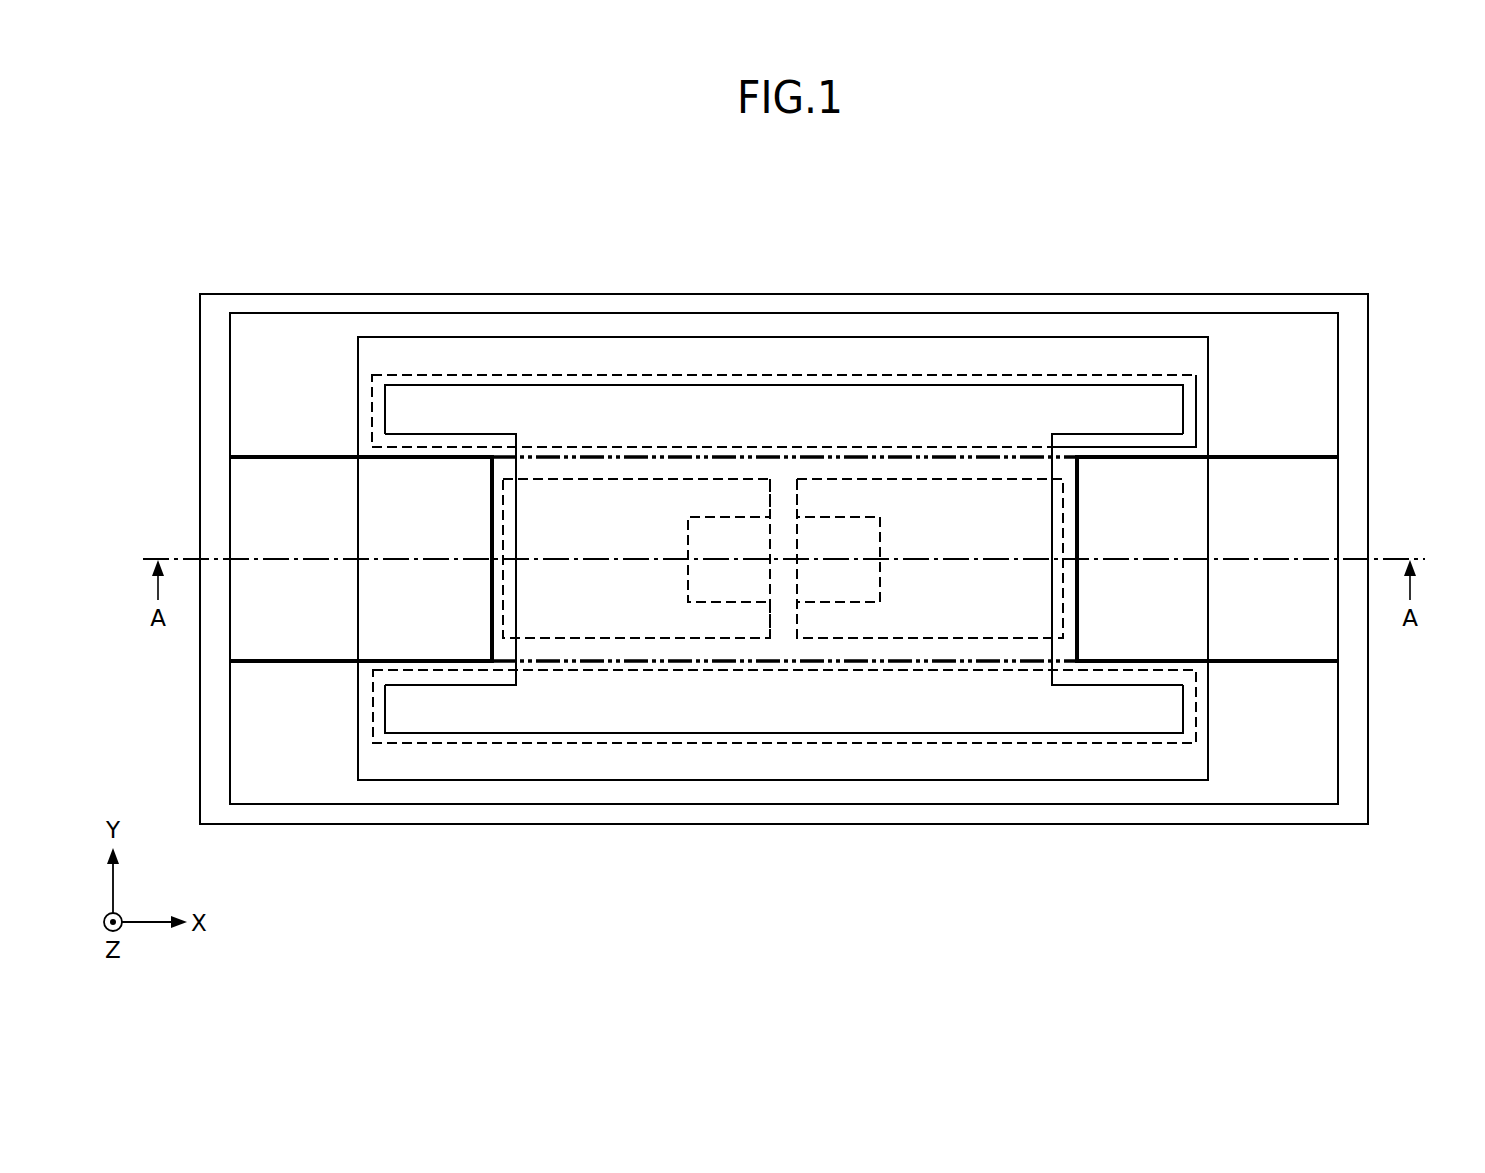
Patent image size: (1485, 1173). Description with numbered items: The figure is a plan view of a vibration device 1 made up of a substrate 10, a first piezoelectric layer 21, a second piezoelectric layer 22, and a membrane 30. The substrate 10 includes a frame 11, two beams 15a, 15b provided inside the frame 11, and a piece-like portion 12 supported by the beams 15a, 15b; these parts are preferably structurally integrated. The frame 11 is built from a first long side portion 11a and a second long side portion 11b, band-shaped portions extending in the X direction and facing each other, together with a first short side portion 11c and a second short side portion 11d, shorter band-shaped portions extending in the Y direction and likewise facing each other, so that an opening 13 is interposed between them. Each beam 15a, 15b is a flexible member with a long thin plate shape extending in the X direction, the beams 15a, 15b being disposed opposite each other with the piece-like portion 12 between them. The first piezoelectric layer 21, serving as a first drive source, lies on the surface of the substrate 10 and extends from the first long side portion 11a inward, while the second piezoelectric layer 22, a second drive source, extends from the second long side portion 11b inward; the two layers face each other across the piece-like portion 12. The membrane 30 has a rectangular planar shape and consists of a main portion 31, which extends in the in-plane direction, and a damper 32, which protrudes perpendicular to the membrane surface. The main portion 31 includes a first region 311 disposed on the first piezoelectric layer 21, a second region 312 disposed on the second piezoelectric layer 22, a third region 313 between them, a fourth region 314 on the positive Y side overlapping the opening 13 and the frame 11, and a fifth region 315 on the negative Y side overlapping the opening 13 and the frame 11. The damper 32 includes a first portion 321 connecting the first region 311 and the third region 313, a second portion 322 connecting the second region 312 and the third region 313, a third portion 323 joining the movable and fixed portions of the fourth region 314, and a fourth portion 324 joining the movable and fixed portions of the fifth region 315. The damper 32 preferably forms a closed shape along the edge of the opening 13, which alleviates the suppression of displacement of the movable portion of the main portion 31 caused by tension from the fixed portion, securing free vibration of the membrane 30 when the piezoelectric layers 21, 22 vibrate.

The vibration device 1 is at (616, 246).
The substrate 10 is at (252, 277).
The frame 11 is at (448, 300).
The first long side portion 11a is at (342, 302).
The second long side portion 11b is at (328, 815).
The first short side portion 11c is at (212, 413).
The second short side portion 11d is at (1355, 398).
The piece-like portion 12 is at (828, 602).
The opening 13 is at (1082, 403).
The beam 15a is at (637, 480).
The beam 15b is at (960, 638).
The first piezoelectric layer 21 is at (270, 513).
The second piezoelectric layer 22 is at (1295, 512).
The membrane 30 is at (1311, 293).
The main portion 31 is at (968, 207).
The first region 311 is at (450, 457).
The second region 312 is at (1093, 450).
The third region 313 is at (930, 445).
The fourth region 314 is at (697, 412).
The fifth region 315 is at (855, 700).
The damper 32 is at (595, 935).
The first portion 321 is at (515, 619).
The second portion 322 is at (1053, 593).
The third portion 323 is at (1140, 350).
The fourth portion 324 is at (512, 767).